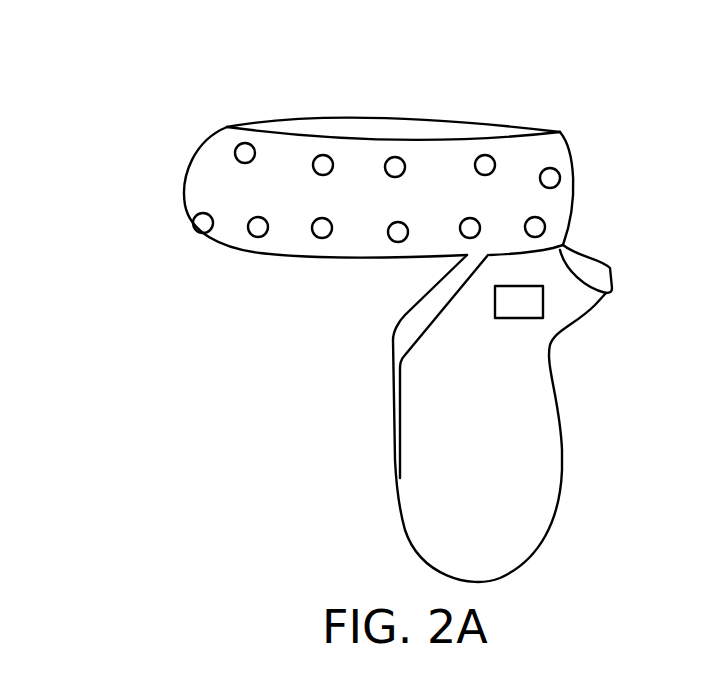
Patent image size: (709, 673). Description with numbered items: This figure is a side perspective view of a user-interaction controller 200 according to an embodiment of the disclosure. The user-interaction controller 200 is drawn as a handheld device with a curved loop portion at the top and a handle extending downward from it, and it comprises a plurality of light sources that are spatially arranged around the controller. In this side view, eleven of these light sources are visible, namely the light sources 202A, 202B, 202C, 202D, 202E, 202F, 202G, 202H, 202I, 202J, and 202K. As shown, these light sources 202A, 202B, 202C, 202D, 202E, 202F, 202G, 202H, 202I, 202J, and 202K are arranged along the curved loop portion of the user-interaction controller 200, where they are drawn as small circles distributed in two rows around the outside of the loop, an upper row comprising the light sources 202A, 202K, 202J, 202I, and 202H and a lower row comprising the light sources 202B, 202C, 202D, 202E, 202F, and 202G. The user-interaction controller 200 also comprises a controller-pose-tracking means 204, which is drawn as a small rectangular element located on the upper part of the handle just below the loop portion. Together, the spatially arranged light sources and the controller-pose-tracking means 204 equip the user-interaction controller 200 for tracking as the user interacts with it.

The user-interaction controller 200 is at (416, 413).
The light source 202A is at (245, 153).
The light source 202B is at (203, 223).
The light source 202C is at (258, 227).
The light source 202D is at (322, 228).
The light source 202E is at (398, 232).
The light source 202F is at (470, 228).
The light source 202G is at (535, 227).
The light source 202H is at (550, 178).
The light source 202I is at (485, 165).
The light source 202J is at (395, 167).
The light source 202K is at (323, 165).
The controller-pose-tracking means 204 is at (518, 306).